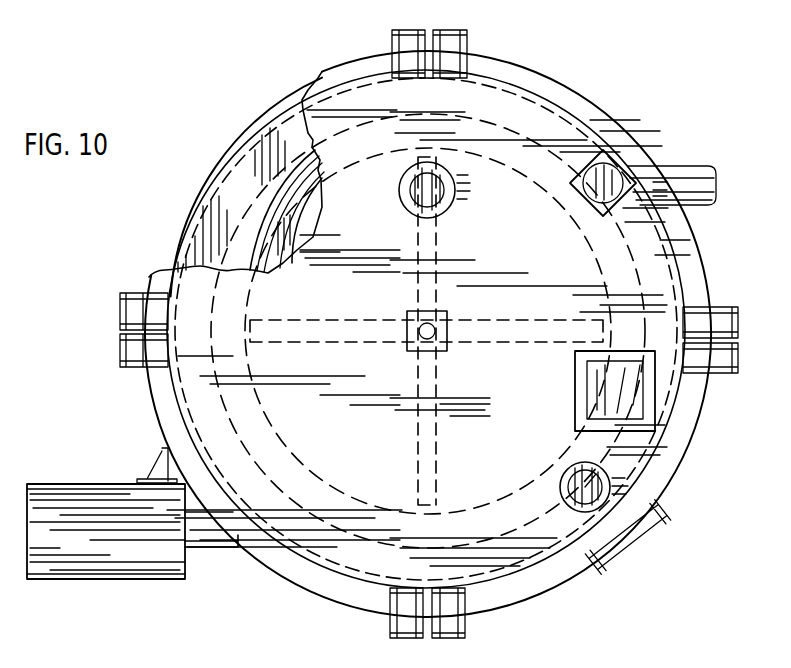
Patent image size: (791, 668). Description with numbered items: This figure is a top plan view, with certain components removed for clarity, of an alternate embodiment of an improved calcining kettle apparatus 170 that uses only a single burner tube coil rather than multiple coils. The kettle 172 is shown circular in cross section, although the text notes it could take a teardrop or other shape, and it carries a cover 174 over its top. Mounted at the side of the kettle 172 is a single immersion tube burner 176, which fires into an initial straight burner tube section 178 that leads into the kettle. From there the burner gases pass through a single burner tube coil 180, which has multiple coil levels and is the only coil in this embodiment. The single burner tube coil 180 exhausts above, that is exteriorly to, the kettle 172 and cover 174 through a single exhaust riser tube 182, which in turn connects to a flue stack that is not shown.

The calcining kettle apparatus 170 is at (540, 604).
The kettle 172 is at (208, 162).
The cover 174 is at (354, 441).
The immersion tube burner 176 is at (118, 562).
The initial straight burner tube section 178 is at (206, 548).
The burner tube coil 180 is at (236, 212).
The exhaust riser tube 182 is at (609, 485).